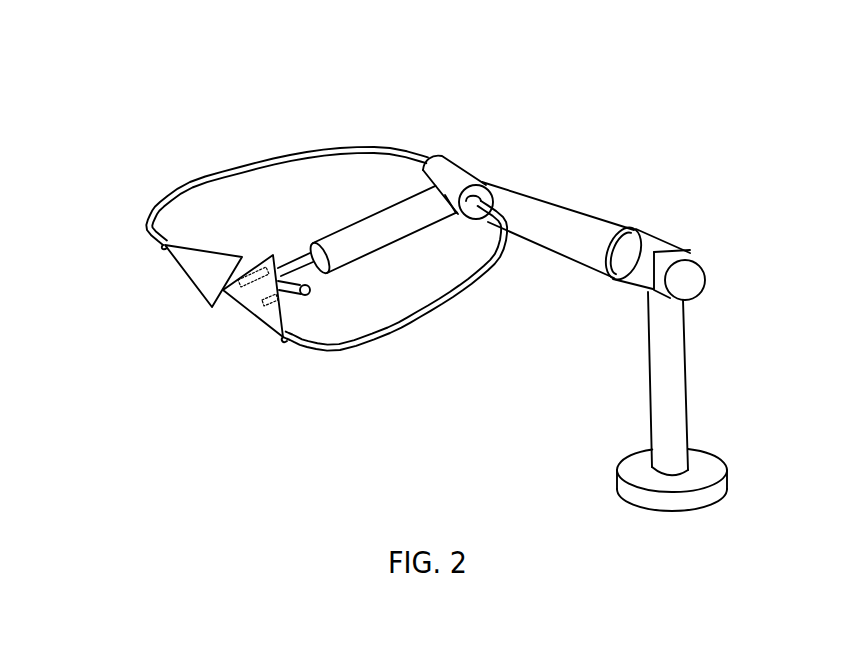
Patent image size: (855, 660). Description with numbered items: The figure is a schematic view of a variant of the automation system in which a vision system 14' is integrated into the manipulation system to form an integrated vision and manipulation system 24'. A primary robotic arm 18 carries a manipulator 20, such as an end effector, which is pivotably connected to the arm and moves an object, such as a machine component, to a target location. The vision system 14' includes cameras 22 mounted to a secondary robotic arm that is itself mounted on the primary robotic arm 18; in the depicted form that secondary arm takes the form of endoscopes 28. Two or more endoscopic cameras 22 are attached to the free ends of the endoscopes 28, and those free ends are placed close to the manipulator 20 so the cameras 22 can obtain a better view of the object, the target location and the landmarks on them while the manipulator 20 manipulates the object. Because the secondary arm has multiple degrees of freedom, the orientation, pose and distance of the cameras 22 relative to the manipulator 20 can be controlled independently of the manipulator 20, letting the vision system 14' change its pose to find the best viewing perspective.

The vision system 14' is at (120, 111).
The primary robotic arm 18 is at (547, 206).
The manipulator 20 is at (287, 293).
The camera 22 is at (163, 247).
The integrated vision and manipulation system 24' is at (675, 264).
The endoscopes 28 is at (320, 152).